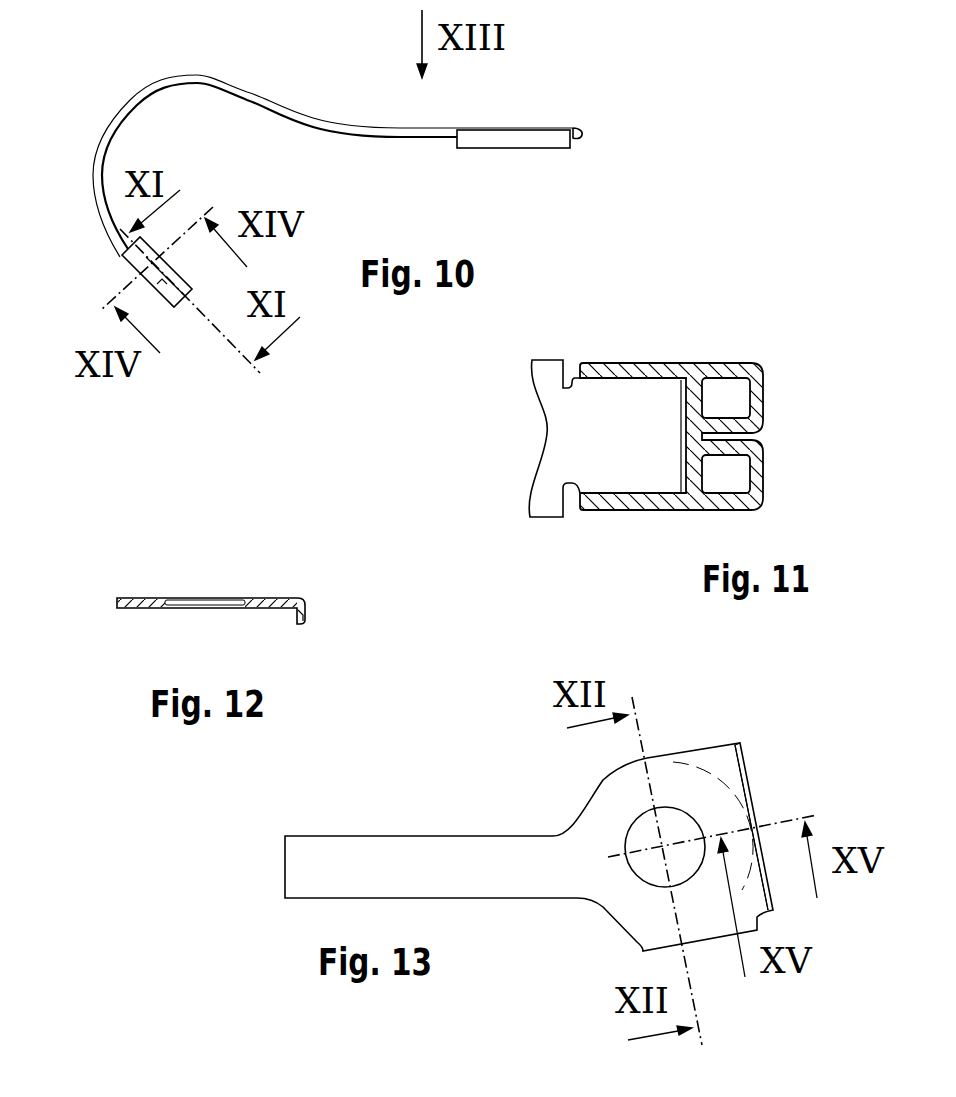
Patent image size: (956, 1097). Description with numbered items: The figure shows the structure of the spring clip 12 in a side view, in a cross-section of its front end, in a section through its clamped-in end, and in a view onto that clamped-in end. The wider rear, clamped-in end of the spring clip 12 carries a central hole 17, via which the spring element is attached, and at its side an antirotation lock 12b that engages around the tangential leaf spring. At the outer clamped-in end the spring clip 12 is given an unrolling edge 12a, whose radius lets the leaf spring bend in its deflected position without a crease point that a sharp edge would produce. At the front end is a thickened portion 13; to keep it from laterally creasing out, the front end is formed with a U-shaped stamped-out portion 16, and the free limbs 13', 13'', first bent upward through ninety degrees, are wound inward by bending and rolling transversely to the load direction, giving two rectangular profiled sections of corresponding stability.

In FIG. 10, the spring clip 12 is at (320, 122).
In FIG. 13, the spring clip 12 is at (512, 872).
In FIG. 10, the unrolling edge 12a is at (580, 138).
In FIG. 13, the unrolling edge 12a is at (750, 790).
In FIG. 10, the antirotation lock 12b is at (500, 143).
In FIG. 12, the antirotation lock 12b is at (305, 620).
In FIG. 10, the thickened portion 13 is at (175, 320).
In FIG. 11, the free limb 13' is at (667, 339).
In FIG. 11, the free limb 13'' is at (667, 547).
In FIG. 11, the U-shaped stamped-out portion 16 is at (702, 425).
In FIG. 12, the central hole 17 is at (215, 602).
In FIG. 13, the central hole 17 is at (645, 835).